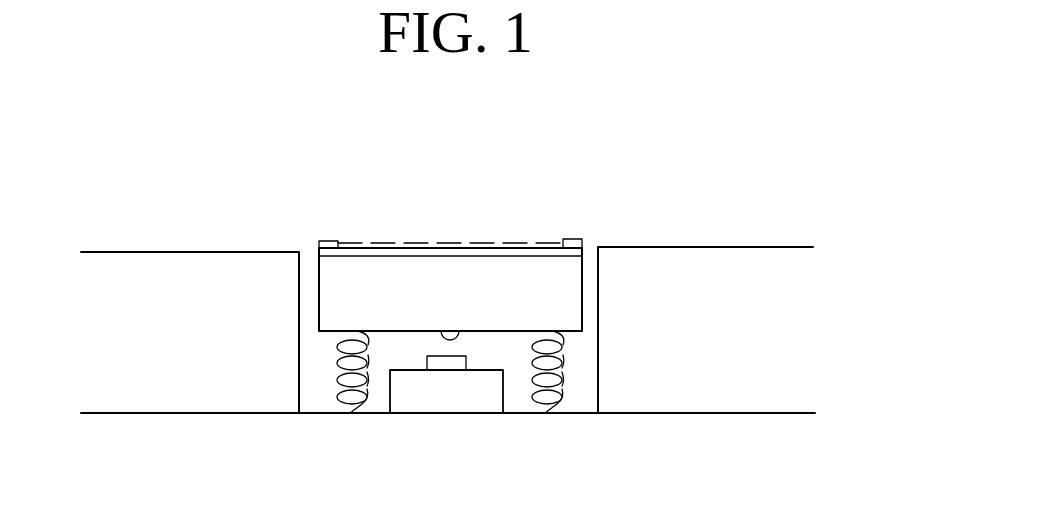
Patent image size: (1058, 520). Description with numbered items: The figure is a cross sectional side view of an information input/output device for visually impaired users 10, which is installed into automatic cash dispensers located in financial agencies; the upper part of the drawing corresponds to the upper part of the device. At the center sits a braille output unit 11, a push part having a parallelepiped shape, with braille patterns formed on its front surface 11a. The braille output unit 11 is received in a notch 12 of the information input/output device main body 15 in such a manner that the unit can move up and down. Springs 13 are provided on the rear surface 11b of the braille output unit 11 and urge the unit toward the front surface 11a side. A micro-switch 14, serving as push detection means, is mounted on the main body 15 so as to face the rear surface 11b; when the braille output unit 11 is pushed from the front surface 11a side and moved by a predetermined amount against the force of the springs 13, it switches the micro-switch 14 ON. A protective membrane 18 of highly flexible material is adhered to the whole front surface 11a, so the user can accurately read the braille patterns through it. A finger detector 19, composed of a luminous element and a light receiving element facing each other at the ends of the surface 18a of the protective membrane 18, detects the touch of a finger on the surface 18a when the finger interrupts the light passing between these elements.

The information input/output device for visually impaired users 10 is at (636, 148).
The braille output unit 11 is at (563, 295).
The front surface 11a is at (423, 257).
The rear surface 11b is at (451, 340).
The notch 12 is at (300, 370).
The springs 13 is at (352, 405).
The micro-switch 14 is at (445, 397).
The information input/output device main body 15 is at (301, 236).
The protective membrane 18 is at (535, 240).
The surface of the protective membrane 18a is at (378, 243).
The finger detector 19 is at (583, 231).